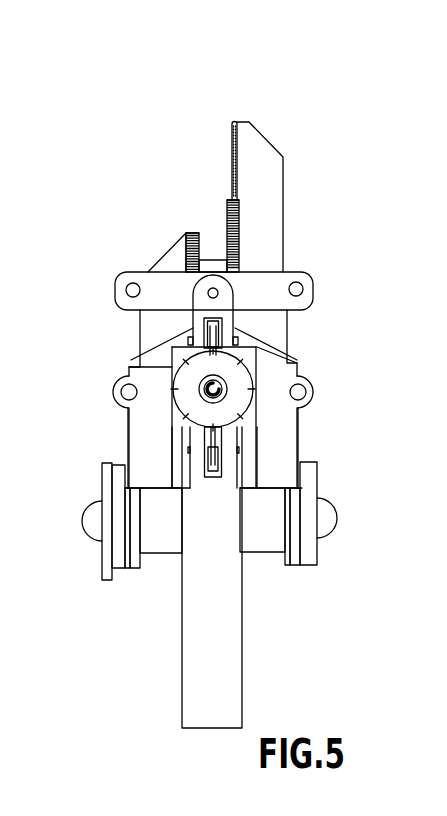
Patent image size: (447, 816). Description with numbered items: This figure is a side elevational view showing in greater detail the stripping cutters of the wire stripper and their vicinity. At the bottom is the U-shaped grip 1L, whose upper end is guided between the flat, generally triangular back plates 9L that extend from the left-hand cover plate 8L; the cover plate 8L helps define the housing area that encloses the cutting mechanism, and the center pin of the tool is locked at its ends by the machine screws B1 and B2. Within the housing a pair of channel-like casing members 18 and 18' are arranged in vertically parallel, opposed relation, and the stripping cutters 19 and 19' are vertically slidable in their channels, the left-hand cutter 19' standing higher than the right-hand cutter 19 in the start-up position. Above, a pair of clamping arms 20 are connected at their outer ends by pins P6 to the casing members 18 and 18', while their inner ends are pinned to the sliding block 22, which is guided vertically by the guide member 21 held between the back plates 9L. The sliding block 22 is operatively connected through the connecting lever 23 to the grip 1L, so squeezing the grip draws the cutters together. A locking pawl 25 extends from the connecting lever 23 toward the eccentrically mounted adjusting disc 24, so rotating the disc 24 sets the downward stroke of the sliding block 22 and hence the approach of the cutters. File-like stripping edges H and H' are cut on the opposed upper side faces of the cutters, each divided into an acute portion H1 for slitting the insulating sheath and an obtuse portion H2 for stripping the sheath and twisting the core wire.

The grip 1L is at (233, 618).
The cover plate 8L is at (287, 425).
The back plates 9L is at (173, 432).
The casing member 18 is at (121, 343).
The casing member 18' is at (293, 342).
The stripping cutter 19 is at (138, 237).
The stripping cutter 19' is at (291, 197).
The clamping arms 20 is at (155, 278).
The guide member 21 is at (253, 362).
The sliding block 22 is at (222, 326).
The connecting lever 23 is at (215, 466).
The adjusting disc 24 is at (172, 348).
The locking pawl 25 is at (193, 324).
The machine screw B1 is at (335, 528).
The machine screw B2 is at (92, 522).
The stripping edge H is at (201, 224).
The stripping edge H' is at (213, 200).
The acute portion H1 is at (190, 233).
The obtuse portion H2 is at (232, 143).
The pins P6 is at (125, 288).